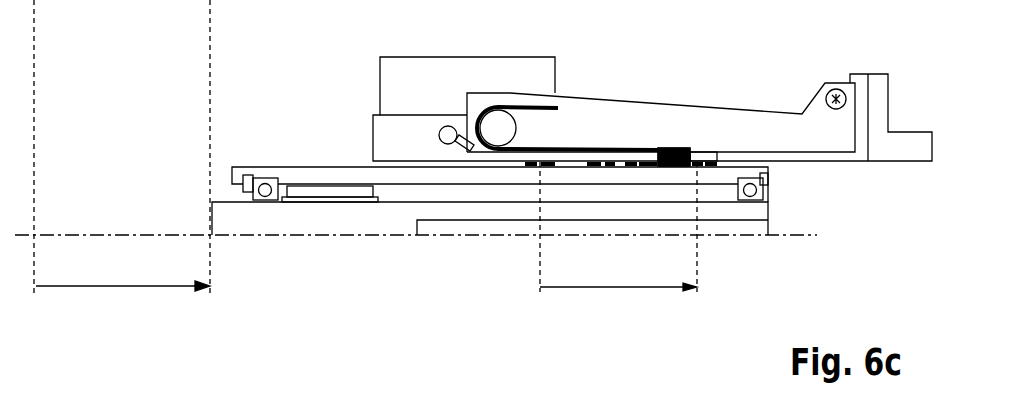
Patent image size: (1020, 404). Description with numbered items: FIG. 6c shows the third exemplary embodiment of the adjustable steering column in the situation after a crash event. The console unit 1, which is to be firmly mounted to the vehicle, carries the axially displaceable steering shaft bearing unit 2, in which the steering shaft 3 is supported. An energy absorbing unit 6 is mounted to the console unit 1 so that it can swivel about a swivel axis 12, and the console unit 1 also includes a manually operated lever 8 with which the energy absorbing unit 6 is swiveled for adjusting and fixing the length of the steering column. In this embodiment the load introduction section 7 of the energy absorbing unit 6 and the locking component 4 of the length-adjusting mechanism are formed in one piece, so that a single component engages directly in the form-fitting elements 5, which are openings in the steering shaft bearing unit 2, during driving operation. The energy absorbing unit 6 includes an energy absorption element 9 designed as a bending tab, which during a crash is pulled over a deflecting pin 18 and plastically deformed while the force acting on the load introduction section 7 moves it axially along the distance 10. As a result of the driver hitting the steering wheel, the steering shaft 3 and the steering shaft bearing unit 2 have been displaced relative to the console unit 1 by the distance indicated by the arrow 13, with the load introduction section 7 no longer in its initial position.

The console unit 1 is at (387, 135).
The steering shaft bearing unit 2 is at (257, 167).
The steering shaft 3 is at (364, 224).
The locking component 4 is at (683, 167).
The form-fitting elements 5 is at (613, 166).
The energy absorbing unit 6 is at (622, 128).
The load introduction section 7 is at (683, 167).
The manually operated lever 8 is at (442, 128).
The energy absorption element 9 is at (653, 149).
The distance 10 is at (628, 288).
The swivel axis 12 is at (834, 89).
The arrow 13 is at (121, 287).
The deflecting pin 18 is at (497, 125).